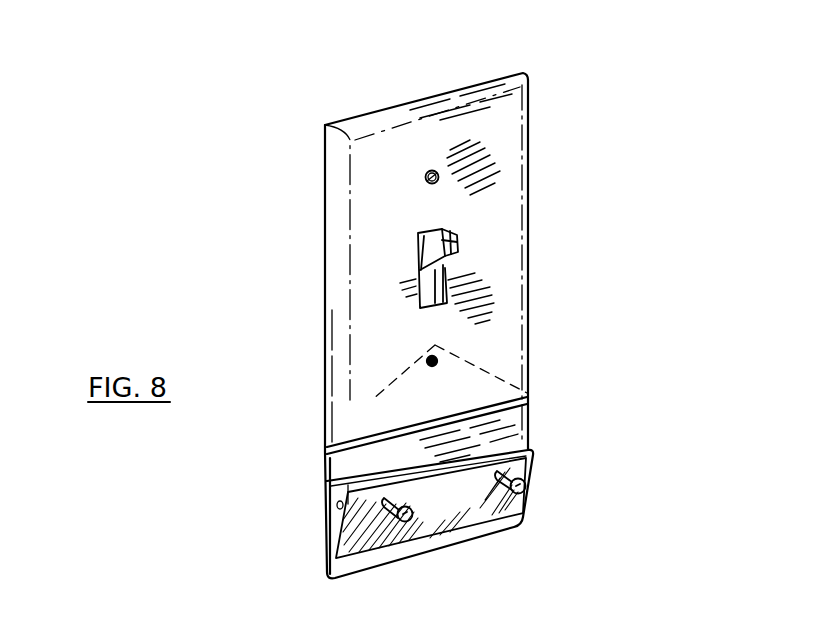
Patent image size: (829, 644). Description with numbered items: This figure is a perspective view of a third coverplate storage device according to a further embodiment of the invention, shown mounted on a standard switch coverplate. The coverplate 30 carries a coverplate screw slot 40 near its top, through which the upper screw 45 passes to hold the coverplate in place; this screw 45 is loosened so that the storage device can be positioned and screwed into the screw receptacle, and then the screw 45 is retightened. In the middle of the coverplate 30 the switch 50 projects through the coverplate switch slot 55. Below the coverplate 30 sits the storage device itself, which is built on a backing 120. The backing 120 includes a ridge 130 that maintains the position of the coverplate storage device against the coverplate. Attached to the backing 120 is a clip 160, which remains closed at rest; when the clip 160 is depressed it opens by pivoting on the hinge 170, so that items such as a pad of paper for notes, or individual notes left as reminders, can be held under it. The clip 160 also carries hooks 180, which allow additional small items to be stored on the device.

The coverplate 30 is at (505, 183).
The coverplate screw slot 40 is at (433, 170).
The screw 45 is at (430, 181).
The switch 50 is at (460, 240).
The coverplate switch slot 55 is at (447, 273).
The backing 120 is at (522, 432).
The ridge 130 is at (523, 405).
The clip 160 is at (340, 543).
The hinge 170 is at (337, 505).
The hooks 180 is at (418, 512).